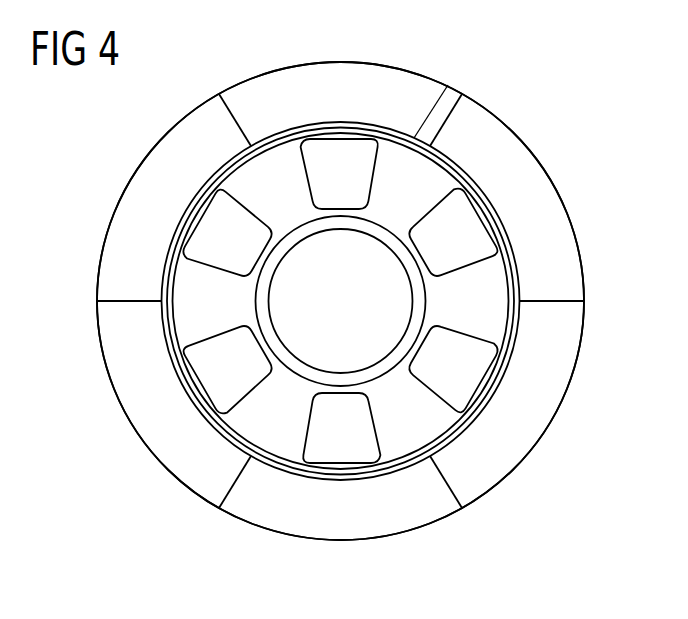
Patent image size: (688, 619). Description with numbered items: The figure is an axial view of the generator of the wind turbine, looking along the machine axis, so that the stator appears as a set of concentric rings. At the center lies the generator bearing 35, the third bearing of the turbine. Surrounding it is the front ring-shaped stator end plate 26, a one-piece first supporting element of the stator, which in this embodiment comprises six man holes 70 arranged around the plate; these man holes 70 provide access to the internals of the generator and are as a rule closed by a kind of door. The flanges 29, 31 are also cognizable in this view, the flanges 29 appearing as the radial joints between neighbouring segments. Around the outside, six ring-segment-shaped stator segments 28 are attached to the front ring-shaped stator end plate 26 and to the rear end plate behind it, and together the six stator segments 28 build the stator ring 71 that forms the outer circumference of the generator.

The front ring-shaped stator end plate 26 is at (438, 185).
The ring-segment-shaped stator segments 28 is at (262, 90).
The flange 29 is at (340, 128).
The flange 31 is at (448, 85).
The generator bearing 35 is at (417, 313).
The man holes 70 is at (477, 373).
The stator ring 71 is at (560, 410).